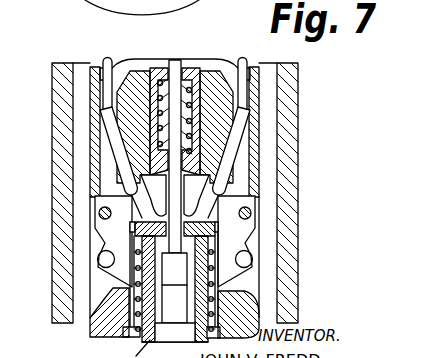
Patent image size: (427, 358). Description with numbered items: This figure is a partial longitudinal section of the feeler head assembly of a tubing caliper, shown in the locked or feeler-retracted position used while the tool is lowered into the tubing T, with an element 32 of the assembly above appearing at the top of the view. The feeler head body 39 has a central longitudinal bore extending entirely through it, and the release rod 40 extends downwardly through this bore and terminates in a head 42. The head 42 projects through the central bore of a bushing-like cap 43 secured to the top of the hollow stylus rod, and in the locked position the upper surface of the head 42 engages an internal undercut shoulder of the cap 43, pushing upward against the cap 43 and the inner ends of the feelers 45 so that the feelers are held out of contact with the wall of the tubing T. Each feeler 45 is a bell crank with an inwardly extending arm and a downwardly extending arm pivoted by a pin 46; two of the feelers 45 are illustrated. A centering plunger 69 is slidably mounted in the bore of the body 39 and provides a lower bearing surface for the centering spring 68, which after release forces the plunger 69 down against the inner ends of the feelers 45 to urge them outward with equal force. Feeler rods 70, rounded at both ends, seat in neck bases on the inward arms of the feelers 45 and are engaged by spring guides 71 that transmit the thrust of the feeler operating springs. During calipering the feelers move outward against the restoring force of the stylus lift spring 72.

The packer body 32 is at (123, 7).
The tubing T is at (290, 127).
The feeler head body 39 is at (211, 93).
The release rod 40 is at (179, 75).
The head 42 is at (177, 282).
The cap 43 is at (215, 229).
The feelers 45 is at (120, 202).
The pin 46 is at (99, 215).
The centering spring 68 is at (163, 80).
The centering plunger 69 is at (156, 72).
The feeler rod 70 is at (120, 148).
The spring guide 71 is at (103, 65).
The stylus lift spring 72 is at (137, 312).